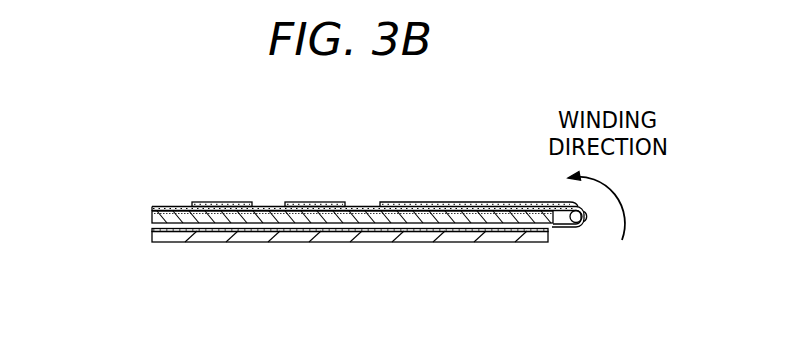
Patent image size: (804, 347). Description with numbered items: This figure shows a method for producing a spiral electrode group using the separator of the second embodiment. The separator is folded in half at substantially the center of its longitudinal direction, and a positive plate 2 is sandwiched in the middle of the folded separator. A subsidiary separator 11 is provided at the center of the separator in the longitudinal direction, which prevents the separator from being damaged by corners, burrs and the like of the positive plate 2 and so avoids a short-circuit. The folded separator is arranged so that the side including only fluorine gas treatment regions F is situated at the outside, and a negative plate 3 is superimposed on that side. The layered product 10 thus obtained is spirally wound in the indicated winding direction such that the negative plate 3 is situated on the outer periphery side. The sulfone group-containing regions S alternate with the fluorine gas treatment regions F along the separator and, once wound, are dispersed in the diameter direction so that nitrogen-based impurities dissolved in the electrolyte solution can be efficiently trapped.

The layered product 10 is at (481, 129).
The positive plate 2 is at (152, 218).
The negative plate 3 is at (278, 243).
The subsidiary separator 11 is at (553, 231).
The sulfone group-containing regions S is at (173, 206).
The fluorine gas treatment regions F is at (222, 202).